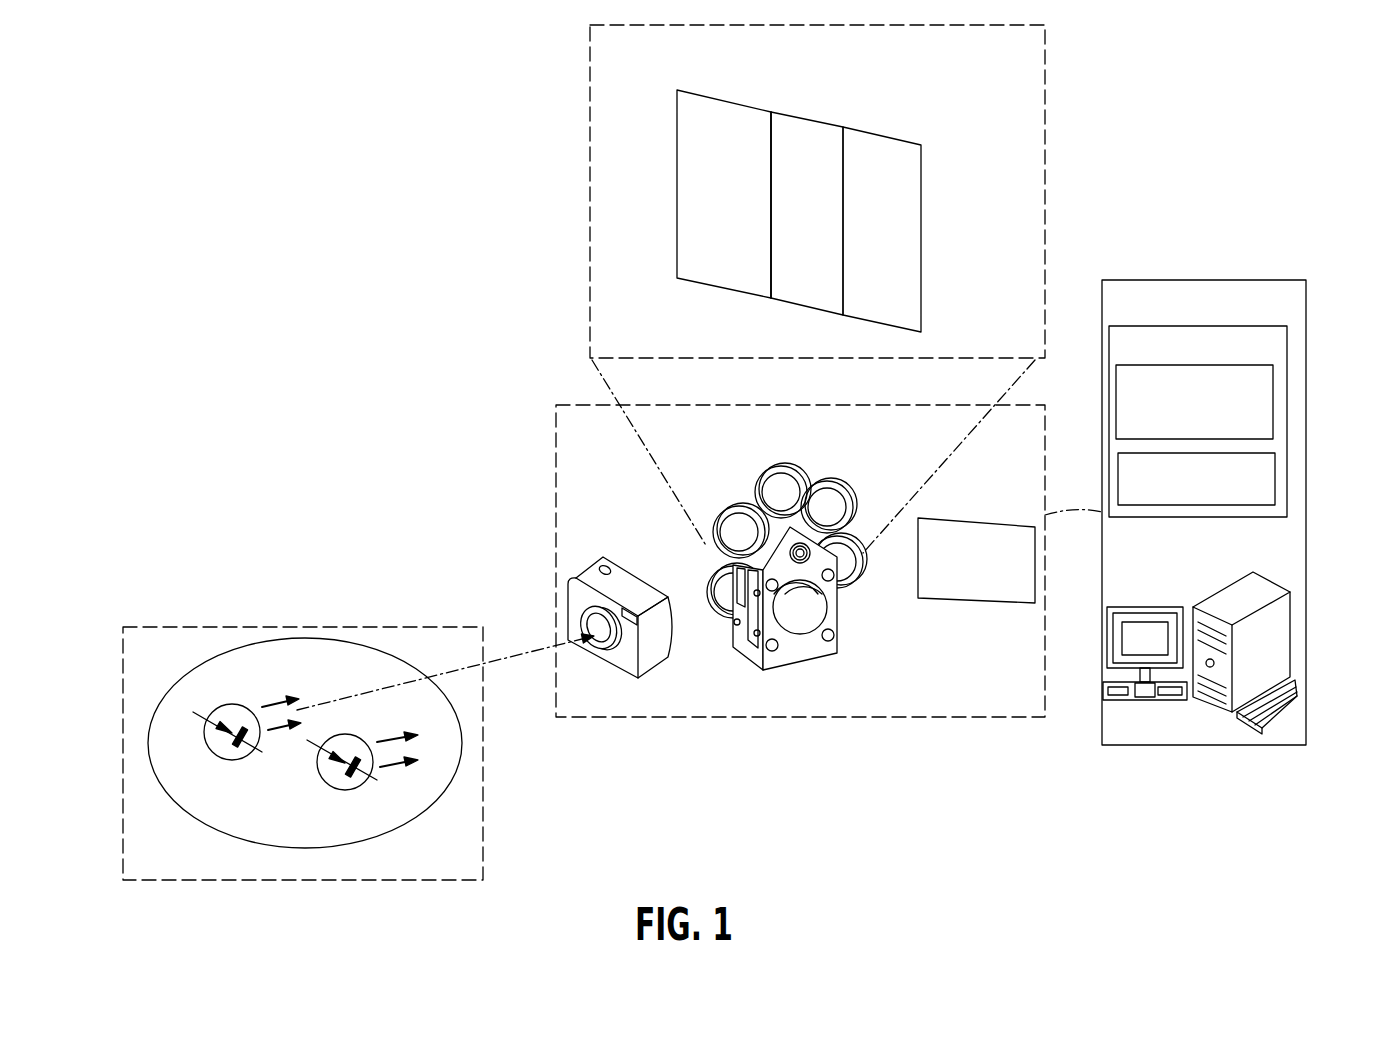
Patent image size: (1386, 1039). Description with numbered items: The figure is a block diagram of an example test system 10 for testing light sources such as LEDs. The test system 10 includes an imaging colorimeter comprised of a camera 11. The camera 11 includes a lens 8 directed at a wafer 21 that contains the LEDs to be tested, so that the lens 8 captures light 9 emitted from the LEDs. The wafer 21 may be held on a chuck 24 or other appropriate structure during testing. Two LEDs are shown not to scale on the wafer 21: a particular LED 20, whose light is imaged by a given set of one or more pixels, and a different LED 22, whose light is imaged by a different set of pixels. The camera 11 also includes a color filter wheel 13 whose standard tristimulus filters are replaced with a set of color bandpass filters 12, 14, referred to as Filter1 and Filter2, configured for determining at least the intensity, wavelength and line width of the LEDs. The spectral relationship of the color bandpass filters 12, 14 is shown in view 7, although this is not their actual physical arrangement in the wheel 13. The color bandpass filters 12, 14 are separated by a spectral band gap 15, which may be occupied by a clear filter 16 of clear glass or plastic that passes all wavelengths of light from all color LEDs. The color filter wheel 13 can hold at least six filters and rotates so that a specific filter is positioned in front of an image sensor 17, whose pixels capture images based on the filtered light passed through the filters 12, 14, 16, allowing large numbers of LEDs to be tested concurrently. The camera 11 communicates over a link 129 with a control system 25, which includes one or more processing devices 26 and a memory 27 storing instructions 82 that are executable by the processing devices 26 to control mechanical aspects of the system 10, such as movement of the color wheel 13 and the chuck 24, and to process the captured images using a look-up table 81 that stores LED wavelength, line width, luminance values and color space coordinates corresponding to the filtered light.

The view 7 is at (1045, 139).
The lens 8 is at (600, 650).
The light 9 is at (510, 657).
The test system 10 is at (386, 258).
The camera 11 is at (556, 421).
The color bandpass filter 12 is at (677, 101).
The color filter wheel 13 is at (787, 668).
The color bandpass filter 14 is at (921, 157).
The spectral band gap 15 is at (773, 108).
The clear filter 16 is at (771, 298).
The image sensor 17 is at (1003, 525).
The LED 20 is at (247, 757).
The wafer 21 is at (403, 807).
The LED 22 is at (367, 740).
The chuck 24 is at (483, 850).
The control system 25 is at (1128, 280).
The processing device 26 is at (1223, 710).
The memory 27 is at (1287, 335).
The look-up table (LUT) 81 is at (1275, 465).
The instructions 82 is at (1273, 388).
The communication link 129 is at (1060, 513).